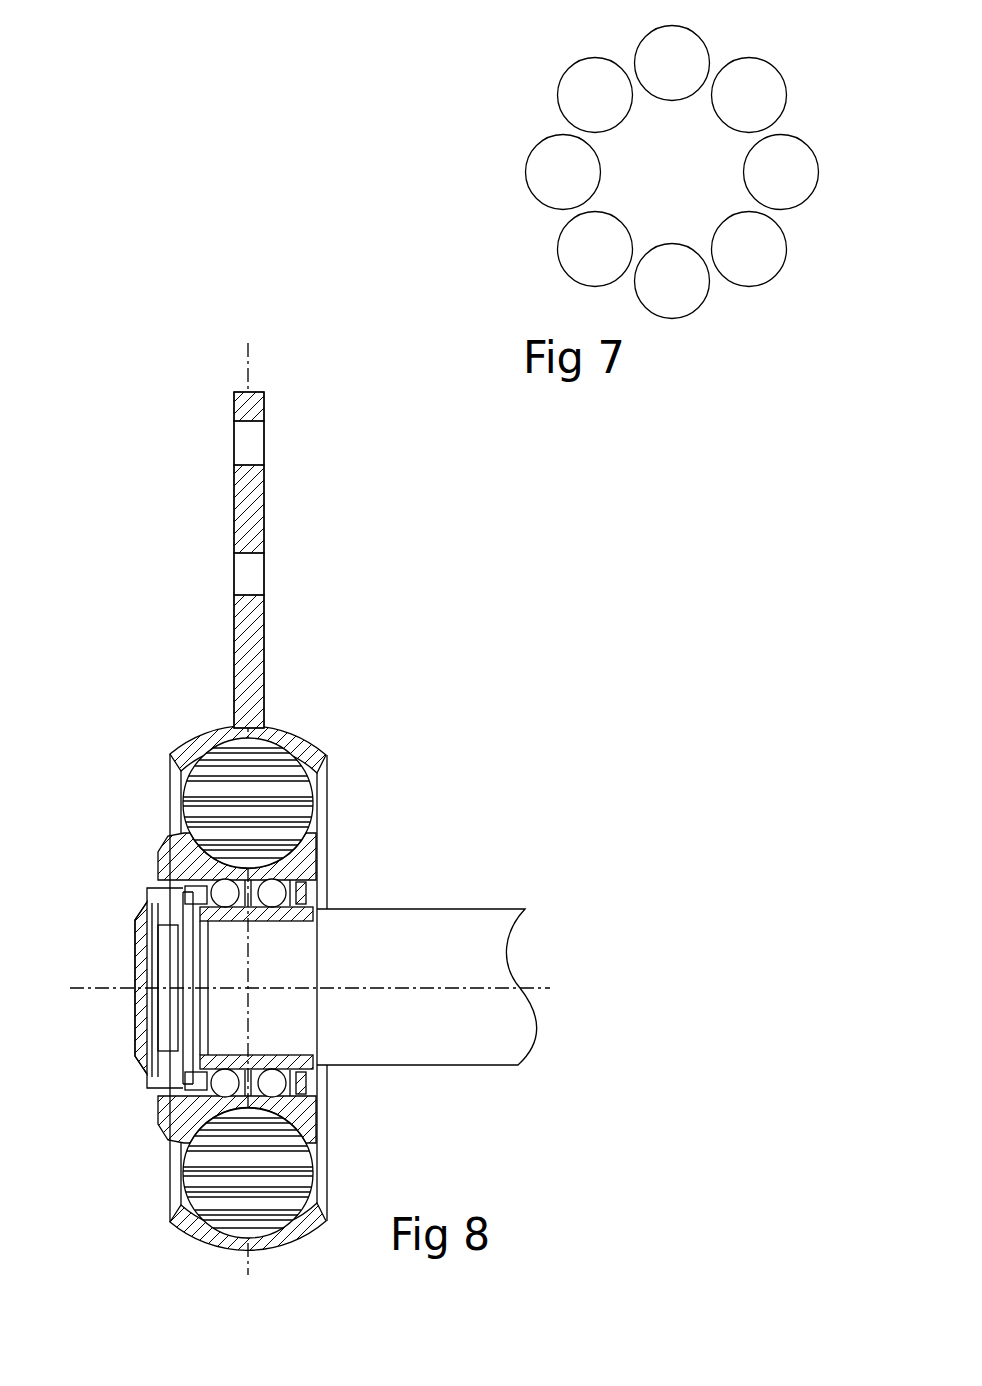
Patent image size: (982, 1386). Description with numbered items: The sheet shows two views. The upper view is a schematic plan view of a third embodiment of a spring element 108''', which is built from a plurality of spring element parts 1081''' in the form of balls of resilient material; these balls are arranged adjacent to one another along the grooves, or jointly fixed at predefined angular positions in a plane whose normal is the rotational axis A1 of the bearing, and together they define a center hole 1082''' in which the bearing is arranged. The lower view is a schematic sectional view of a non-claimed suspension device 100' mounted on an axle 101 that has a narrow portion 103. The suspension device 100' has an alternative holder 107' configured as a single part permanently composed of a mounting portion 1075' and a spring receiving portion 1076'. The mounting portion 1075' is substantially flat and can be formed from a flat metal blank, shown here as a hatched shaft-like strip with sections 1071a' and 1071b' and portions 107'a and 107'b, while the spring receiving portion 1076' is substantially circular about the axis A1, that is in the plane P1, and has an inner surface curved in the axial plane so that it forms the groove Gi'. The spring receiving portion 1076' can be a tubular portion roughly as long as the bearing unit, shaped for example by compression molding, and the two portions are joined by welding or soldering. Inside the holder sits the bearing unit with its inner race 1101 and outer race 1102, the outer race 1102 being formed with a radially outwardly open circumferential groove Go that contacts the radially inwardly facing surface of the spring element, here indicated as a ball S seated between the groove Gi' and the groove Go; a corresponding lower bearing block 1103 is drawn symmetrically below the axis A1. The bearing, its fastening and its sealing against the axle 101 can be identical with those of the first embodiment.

In FIG. 7, the spring element 108''' is at (643, 164).
In FIG. 7, the spring element parts 1081''' is at (800, 95).
In FIG. 7, the center hole 1082''' is at (769, 268).
In FIG. 8, the plane P1 is at (243, 369).
In FIG. 8, the suspension device 100' is at (340, 811).
In FIG. 8, the first shaft portion 1071a' is at (331, 462).
In FIG. 8, the mounting portion 1075' is at (334, 509).
In FIG. 8, the first joint part 107'a is at (433, 465).
In FIG. 8, the second shaft portion 1071b' is at (331, 594).
In FIG. 8, the holder 107' is at (433, 560).
In FIG. 8, the ball S is at (207, 787).
In FIG. 8, the spring receiving portion 1076' is at (299, 986).
In FIG. 8, the outer race 1102 is at (160, 851).
In FIG. 8, the groove Gi' is at (285, 803).
In FIG. 8, the second joint part 107'b is at (391, 988).
In FIG. 8, the rotational axis A1 is at (92, 986).
In FIG. 8, the narrow portion 103 is at (293, 967).
In FIG. 8, the axle 101 is at (472, 967).
In FIG. 8, the inner race 1101 is at (318, 1065).
In FIG. 8, the lower bearing block 1103 is at (158, 1112).
In FIG. 8, the groove Go is at (208, 1143).